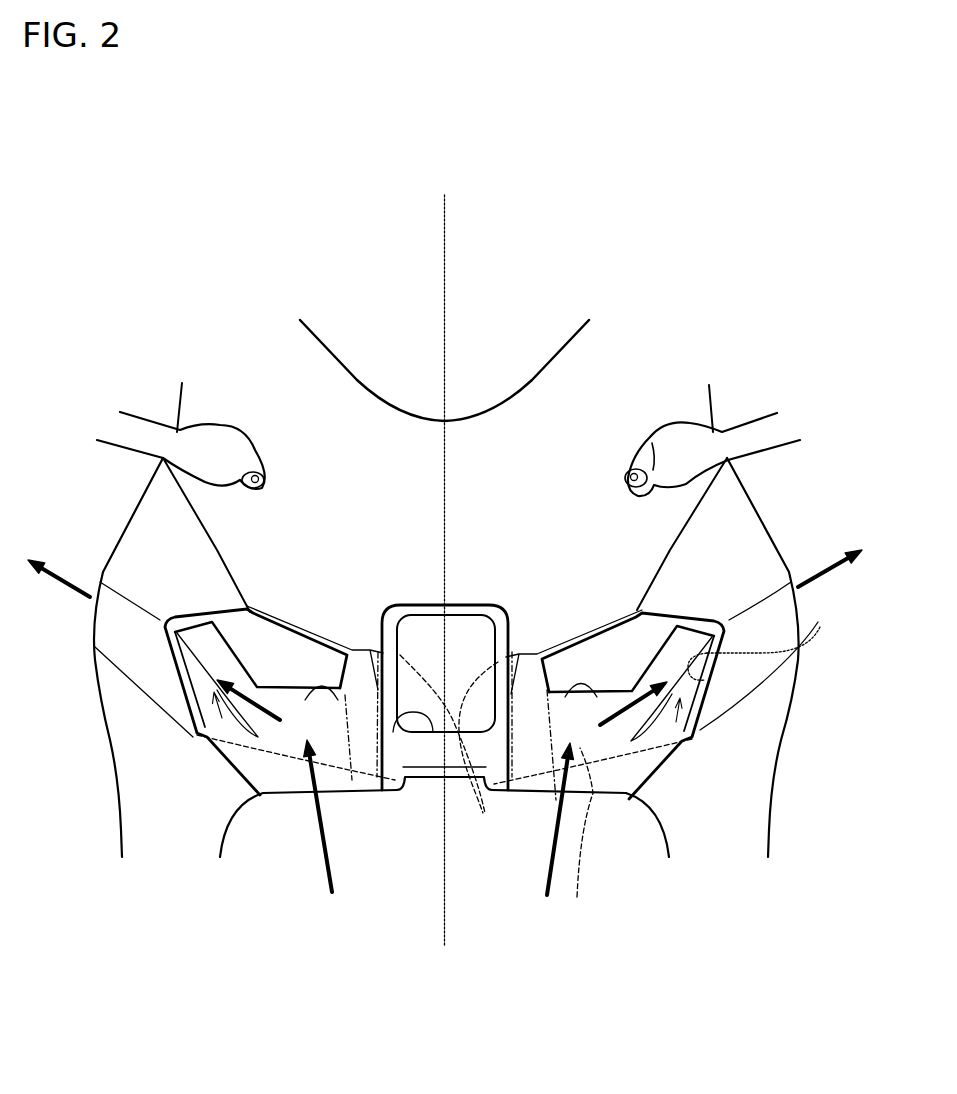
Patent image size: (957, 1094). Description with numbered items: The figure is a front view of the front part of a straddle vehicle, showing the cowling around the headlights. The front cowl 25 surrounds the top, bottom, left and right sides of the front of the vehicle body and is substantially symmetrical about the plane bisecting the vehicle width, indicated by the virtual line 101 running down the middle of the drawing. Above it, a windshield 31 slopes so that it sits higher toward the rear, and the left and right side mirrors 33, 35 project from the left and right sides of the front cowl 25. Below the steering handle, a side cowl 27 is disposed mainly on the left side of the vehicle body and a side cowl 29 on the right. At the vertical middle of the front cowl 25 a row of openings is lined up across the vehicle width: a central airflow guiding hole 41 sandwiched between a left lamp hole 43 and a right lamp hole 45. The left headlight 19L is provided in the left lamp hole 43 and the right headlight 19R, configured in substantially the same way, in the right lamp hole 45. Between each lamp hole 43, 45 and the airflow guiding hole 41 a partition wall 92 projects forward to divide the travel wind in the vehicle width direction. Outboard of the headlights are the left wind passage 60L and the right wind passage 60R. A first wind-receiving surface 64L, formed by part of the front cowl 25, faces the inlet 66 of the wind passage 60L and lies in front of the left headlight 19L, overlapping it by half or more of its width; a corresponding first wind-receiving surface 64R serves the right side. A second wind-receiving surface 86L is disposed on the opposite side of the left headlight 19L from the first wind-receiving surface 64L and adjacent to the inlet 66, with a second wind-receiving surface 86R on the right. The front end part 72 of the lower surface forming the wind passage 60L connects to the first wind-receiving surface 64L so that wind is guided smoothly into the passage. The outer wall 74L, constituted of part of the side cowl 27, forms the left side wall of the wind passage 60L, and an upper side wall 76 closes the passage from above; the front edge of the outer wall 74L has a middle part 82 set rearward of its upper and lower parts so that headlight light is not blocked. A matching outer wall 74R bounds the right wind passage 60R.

The virtual line 101 is at (447, 283).
The front cowl 25 is at (327, 387).
The windshield 31 is at (543, 358).
The right side mirror 35 is at (140, 423).
The left side mirror 33 is at (745, 430).
The side cowl 29 is at (108, 783).
The side cowl 27 is at (778, 822).
The outer wall 74R is at (112, 532).
The outer wall 74L is at (785, 539).
The upper side wall 76 is at (742, 490).
The inlet 66 is at (773, 660).
The right wind passage 60R is at (223, 748).
The wind passage 60L is at (672, 757).
The right headlight 19R is at (270, 643).
The left headlight 19L is at (622, 643).
The second wind-receiving surface 86R is at (340, 638).
The second wind-receiving surface 86L is at (553, 638).
The first wind-receiving surface 64R is at (283, 750).
The first wind-receiving surface 64L is at (579, 842).
The right lamp hole 45 is at (350, 762).
The left lamp hole 43 is at (547, 760).
The airflow guiding hole 41 is at (408, 782).
The partition wall 92 is at (453, 752).
The middle part 82 is at (725, 615).
The front end part 72 is at (640, 720).